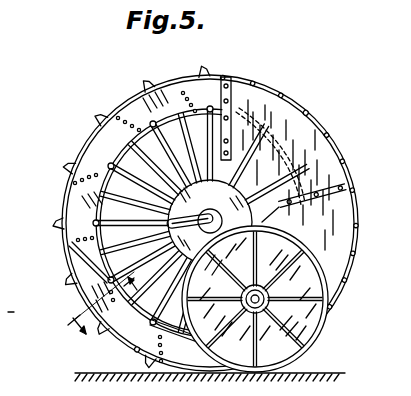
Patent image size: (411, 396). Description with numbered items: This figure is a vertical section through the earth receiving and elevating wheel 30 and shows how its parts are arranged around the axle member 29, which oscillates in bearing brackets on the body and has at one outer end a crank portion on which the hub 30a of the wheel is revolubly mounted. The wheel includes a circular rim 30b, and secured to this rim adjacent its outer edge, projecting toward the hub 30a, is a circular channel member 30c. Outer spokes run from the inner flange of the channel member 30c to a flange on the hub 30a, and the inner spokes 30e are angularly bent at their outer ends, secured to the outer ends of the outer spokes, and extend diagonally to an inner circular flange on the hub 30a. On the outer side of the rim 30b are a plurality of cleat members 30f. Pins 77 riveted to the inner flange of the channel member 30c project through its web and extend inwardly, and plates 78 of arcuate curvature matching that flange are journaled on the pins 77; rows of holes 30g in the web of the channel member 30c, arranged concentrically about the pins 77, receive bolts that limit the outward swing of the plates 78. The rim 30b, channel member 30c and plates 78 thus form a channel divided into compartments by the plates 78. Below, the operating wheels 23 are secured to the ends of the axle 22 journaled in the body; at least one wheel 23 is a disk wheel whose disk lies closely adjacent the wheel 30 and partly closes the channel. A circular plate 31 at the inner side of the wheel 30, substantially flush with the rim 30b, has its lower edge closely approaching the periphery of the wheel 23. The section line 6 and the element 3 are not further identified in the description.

The frame 3 is at (7, 310).
The section line 6 is at (103, 306).
The axle 22 is at (318, 328).
The operating wheels 23 is at (302, 315).
The axle member 29 is at (196, 157).
The earth receiving and elevating wheel 30 is at (141, 110).
The hub 30a is at (161, 223).
The circular rim 30b is at (107, 128).
The circular channel member 30c is at (86, 191).
The inner spokes 30e is at (180, 168).
The cleat members 30f is at (313, 119).
The holes 30g is at (76, 241).
The plate 31 is at (321, 153).
The pins 77 is at (110, 166).
The plates 78 is at (180, 118).